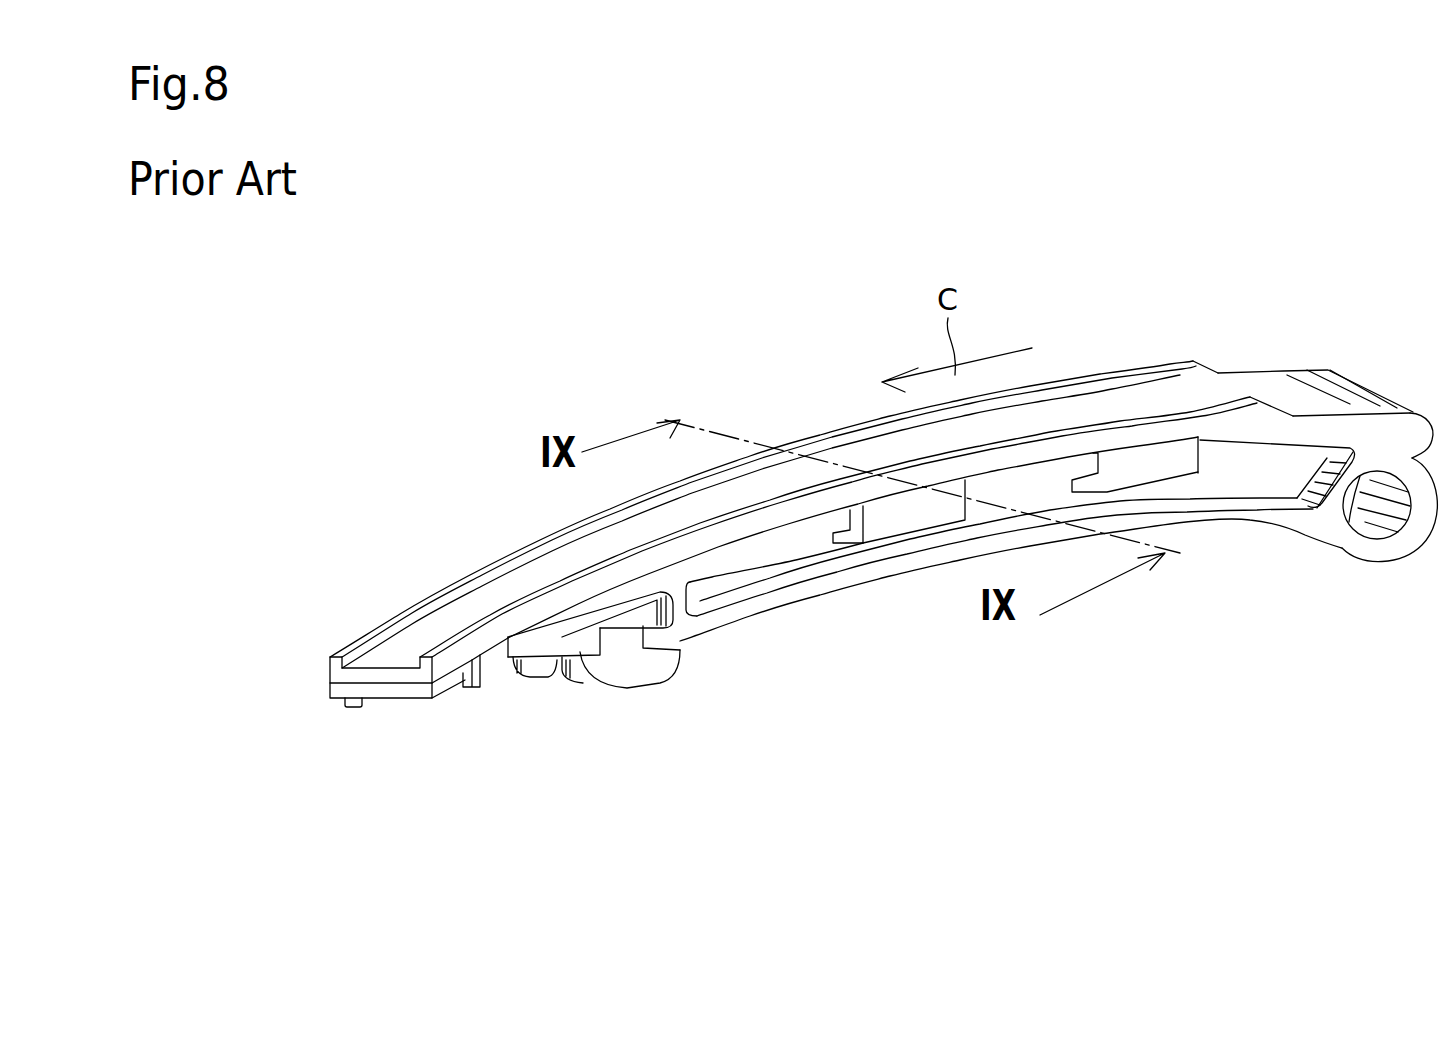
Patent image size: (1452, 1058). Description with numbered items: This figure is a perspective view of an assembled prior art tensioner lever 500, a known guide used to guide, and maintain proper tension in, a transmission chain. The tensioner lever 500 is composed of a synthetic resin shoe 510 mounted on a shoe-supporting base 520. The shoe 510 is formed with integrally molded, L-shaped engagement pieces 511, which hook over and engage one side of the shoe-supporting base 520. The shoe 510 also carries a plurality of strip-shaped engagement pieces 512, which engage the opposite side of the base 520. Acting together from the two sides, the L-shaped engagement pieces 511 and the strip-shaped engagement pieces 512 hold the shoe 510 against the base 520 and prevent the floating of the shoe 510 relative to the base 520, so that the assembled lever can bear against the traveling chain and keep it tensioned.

The tensioner lever 500 is at (1132, 807).
The synthetic resin shoe 510 is at (1223, 660).
The L-shaped engagement pieces 511 is at (491, 670).
The strip-shaped engagement pieces 512 is at (348, 708).
The shoe-supporting base 520 is at (1267, 526).